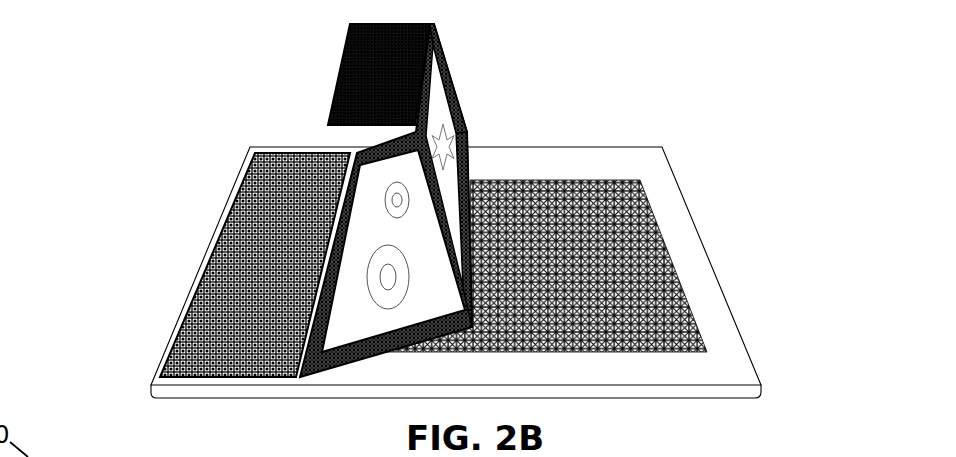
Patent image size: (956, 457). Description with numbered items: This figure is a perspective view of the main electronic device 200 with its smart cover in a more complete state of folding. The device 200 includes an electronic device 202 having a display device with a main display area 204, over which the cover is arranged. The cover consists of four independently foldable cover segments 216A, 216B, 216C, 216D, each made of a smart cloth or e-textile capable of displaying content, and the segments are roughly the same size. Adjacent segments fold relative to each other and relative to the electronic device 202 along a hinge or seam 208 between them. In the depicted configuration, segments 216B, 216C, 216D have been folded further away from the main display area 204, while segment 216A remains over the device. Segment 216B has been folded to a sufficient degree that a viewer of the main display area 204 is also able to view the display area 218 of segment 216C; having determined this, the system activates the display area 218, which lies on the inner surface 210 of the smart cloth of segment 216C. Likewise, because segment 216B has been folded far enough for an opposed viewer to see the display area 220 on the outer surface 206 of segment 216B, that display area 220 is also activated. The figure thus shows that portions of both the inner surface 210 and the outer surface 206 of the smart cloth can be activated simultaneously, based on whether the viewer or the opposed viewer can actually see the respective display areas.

The main electronic device 200 is at (140, 212).
The electronic device 202 is at (713, 268).
The main display area 204 is at (657, 320).
The outer surface 206 is at (419, 239).
The hinge or seam 208 is at (465, 168).
The inner surface 210 is at (397, 58).
The cover segment 216A is at (203, 352).
The cover segment 216B is at (338, 352).
The cover segment 216C is at (465, 210).
The cover segment 216D is at (343, 82).
The display area 218 is at (430, 105).
The display area 220 is at (432, 295).